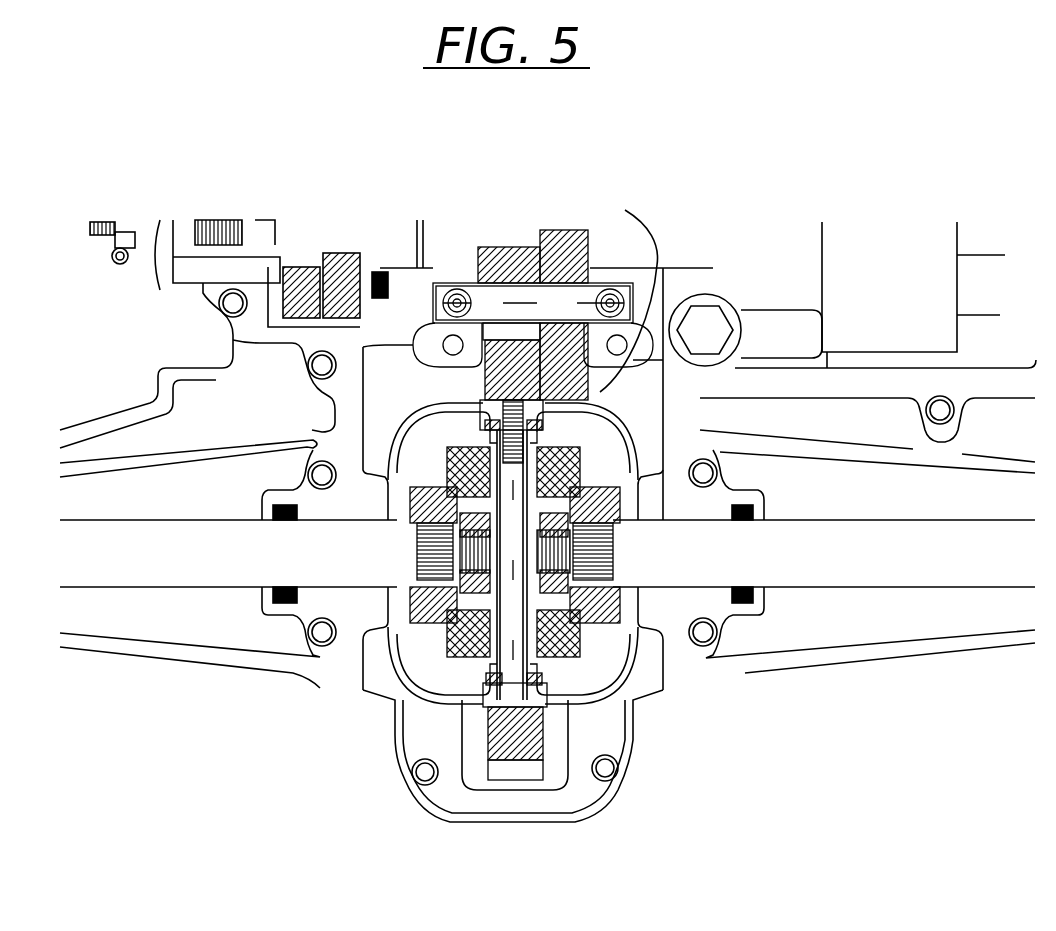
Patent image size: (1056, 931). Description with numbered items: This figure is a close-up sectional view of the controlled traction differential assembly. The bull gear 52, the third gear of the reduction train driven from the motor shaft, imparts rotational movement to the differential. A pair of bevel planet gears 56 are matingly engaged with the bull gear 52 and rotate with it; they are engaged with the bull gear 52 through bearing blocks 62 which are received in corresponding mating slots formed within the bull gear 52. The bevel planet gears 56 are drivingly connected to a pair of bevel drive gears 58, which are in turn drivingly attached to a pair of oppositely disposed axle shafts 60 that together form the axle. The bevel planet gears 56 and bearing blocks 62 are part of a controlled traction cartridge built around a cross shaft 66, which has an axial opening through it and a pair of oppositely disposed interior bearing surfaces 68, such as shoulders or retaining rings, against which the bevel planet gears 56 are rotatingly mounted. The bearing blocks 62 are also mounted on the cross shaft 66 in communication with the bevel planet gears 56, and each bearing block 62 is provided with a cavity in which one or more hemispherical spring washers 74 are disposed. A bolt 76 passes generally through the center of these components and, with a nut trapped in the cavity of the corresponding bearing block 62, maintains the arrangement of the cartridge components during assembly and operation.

The bull gear 52 is at (517, 748).
The bevel planet gears 56 is at (440, 482).
The bevel drive gears 58 is at (430, 650).
The axle shafts 60 is at (243, 560).
The bearing blocks 62 is at (447, 418).
The cross shaft 66 is at (530, 717).
The interior bearing surfaces 68 is at (460, 662).
The hemispherical spring washers 74 is at (633, 199).
The bolt 76 is at (547, 740).